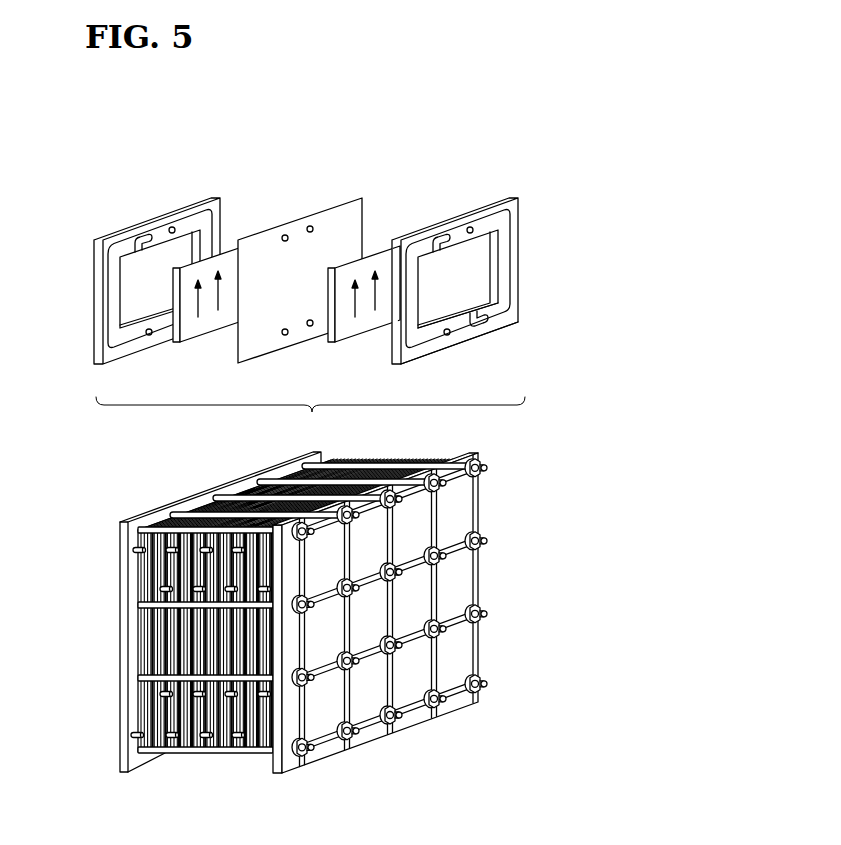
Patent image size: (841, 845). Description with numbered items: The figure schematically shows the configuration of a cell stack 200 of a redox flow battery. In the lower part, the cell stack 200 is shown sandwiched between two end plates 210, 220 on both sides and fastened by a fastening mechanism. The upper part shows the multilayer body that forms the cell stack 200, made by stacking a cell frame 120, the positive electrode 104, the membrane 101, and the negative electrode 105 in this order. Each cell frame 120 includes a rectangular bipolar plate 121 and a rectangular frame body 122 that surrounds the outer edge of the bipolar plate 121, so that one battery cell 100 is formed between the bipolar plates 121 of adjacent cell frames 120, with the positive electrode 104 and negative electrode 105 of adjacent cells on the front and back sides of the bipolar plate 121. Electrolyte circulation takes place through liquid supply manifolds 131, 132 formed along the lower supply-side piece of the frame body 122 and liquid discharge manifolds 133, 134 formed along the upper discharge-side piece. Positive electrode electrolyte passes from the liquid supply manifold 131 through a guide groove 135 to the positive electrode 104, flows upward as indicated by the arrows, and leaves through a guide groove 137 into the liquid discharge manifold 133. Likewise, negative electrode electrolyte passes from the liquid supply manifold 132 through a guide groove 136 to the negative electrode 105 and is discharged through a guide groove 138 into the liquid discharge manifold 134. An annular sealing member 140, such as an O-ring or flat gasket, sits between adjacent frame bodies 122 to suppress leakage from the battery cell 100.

The battery cell 100 is at (424, 397).
The membrane 101 is at (322, 203).
The positive electrode 104 is at (216, 333).
The negative electrode 105 is at (373, 333).
The cell frame 120 is at (334, 273).
The bipolar plate 121 is at (494, 244).
The frame body 122 is at (507, 268).
The liquid supply manifold 131 is at (492, 337).
The liquid supply manifold 132 is at (145, 345).
The liquid discharge manifold 133 is at (143, 236).
The liquid discharge manifold 134 is at (175, 227).
The guide groove 135 is at (519, 325).
The guide groove 136 is at (146, 333).
The guide groove 137 is at (125, 235).
The guide groove 138 is at (212, 198).
The annular sealing member 140 is at (222, 210).
The cell stack 200 is at (311, 641).
The end plate 210 is at (285, 762).
The end plate 220 is at (118, 529).